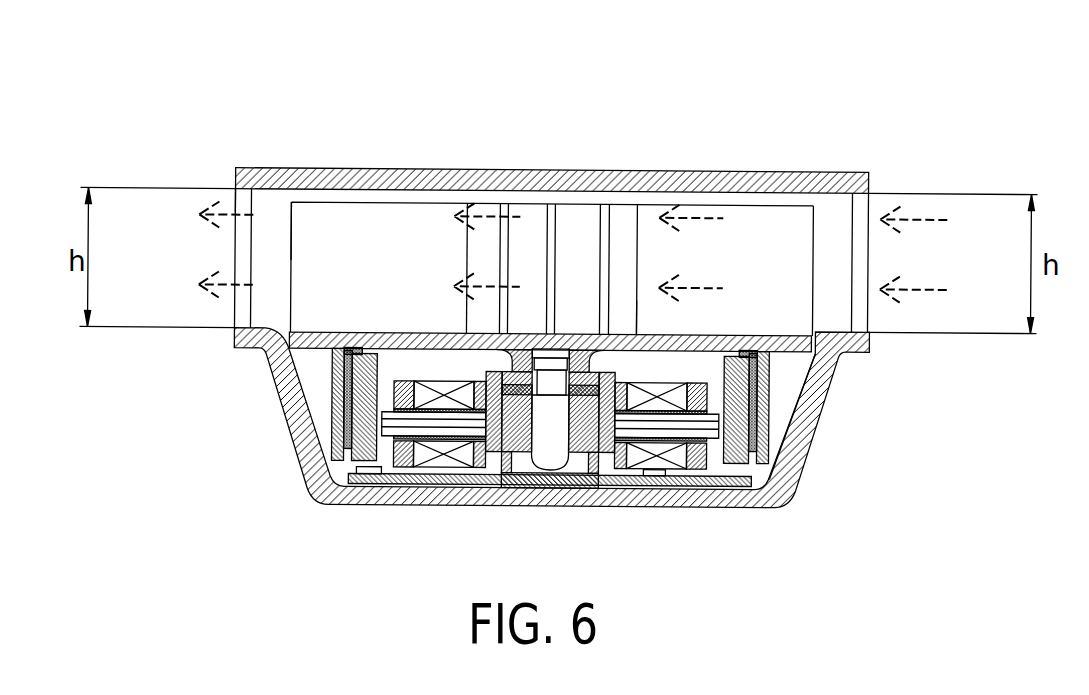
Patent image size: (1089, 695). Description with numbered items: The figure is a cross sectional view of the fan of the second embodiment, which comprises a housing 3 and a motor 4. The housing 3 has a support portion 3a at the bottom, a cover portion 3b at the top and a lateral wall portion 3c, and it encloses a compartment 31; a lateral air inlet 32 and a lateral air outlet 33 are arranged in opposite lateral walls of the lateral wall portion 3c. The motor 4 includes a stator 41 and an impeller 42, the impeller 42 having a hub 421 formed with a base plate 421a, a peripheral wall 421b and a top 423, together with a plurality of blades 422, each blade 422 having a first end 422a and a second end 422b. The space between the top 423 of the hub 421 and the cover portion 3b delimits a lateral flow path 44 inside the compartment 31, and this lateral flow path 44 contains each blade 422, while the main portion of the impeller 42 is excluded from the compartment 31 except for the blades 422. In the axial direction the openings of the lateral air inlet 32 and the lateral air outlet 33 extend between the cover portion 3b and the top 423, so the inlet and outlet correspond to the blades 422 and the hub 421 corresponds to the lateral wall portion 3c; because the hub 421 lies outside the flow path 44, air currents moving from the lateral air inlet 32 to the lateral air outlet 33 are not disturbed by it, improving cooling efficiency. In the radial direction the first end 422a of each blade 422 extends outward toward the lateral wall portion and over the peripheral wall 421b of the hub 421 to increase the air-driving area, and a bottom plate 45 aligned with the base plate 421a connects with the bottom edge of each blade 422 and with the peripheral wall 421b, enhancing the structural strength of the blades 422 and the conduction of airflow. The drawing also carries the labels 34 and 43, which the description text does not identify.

The housing 3 is at (380, 158).
The support portion 3a is at (418, 507).
The cover portion 3b is at (415, 177).
The lateral wall portion 3c is at (232, 197).
The compartment 31 is at (270, 202).
The lateral air inlet 32 is at (879, 265).
The lateral air outlet 33 is at (222, 252).
The inclined inner wall 34 is at (809, 389).
The motor 4 is at (600, 203).
The stator 41 is at (707, 457).
The impeller 42 is at (903, 70).
The hub 421 is at (770, 382).
The base plate 421a is at (655, 338).
The peripheral wall 421b is at (765, 420).
The blades 422 is at (775, 228).
The first end 422a is at (279, 190).
The second end 422b is at (470, 193).
The top 423 is at (742, 250).
The shaft 43 is at (573, 228).
The lateral flow path 44 is at (541, 183).
The bottom plate 45 is at (310, 345).